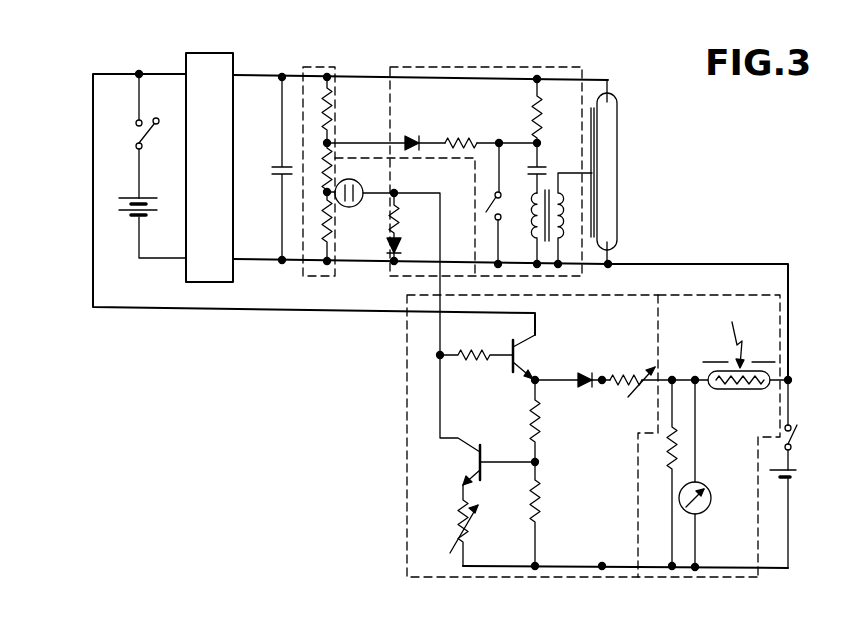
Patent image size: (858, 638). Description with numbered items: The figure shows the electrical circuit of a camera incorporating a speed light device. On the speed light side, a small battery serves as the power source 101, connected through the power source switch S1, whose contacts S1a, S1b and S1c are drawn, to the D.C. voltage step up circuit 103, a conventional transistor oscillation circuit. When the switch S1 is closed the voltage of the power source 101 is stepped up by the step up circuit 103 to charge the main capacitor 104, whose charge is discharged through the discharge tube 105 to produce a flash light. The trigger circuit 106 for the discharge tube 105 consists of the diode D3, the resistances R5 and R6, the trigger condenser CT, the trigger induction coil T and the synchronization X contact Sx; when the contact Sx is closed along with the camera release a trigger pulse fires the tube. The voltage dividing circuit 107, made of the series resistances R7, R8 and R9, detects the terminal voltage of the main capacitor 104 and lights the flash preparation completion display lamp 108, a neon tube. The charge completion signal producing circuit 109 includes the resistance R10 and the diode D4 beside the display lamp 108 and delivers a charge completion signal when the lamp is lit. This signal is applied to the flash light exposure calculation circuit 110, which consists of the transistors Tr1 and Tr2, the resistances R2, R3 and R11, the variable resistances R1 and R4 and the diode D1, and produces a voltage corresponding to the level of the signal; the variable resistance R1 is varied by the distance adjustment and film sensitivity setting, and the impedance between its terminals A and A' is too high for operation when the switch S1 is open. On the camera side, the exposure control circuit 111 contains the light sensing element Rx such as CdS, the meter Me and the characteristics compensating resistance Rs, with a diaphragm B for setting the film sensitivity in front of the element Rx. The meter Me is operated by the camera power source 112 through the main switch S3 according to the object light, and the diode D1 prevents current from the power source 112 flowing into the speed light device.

The power source 101 is at (130, 203).
The D.C. voltage step up circuit 103 is at (208, 58).
The main capacitor 104 is at (273, 172).
The discharge tube 105 is at (618, 138).
The trigger circuit 106 is at (485, 67).
The voltage dividing circuit 107 is at (318, 66).
The flash light preparation completion display lamp 108 is at (352, 179).
The charge completion signal producing circuit 109 is at (373, 277).
The flash light exposure calculation circuit 110 is at (610, 297).
The exposure control circuit 111 is at (697, 297).
The power source 112 is at (800, 471).
The power source switch S1 is at (130, 127).
The switch contact S1a is at (119, 114).
The switch contact S1b is at (165, 110).
The switch contact S1c is at (158, 170).
The main switch S3 is at (795, 436).
The synchronization X contact Sx is at (490, 203).
The variable resistance R1 is at (636, 386).
The resistance R2 is at (541, 418).
The resistance R3 is at (540, 490).
The variable resistance R4 is at (472, 528).
The resistance R5 is at (460, 138).
The resistance R6 is at (532, 112).
The resistance R7 is at (320, 103).
The resistance R8 is at (320, 160).
The resistance R9 is at (320, 218).
The resistance R10 is at (392, 214).
The resistance R11 is at (482, 359).
The characteristics compensating resistance Rs is at (667, 458).
The light sensing element Rx is at (740, 391).
The diode D1 is at (582, 388).
The diode D3 is at (412, 136).
The diode D4 is at (385, 248).
The transistor Tr1 is at (520, 357).
The transistor Tr2 is at (472, 462).
The trigger induction coil T is at (533, 216).
The trigger condenser CT is at (543, 174).
The meter Me is at (711, 496).
The terminal A is at (604, 357).
The terminal A' is at (607, 549).
The diaphragm B is at (755, 360).